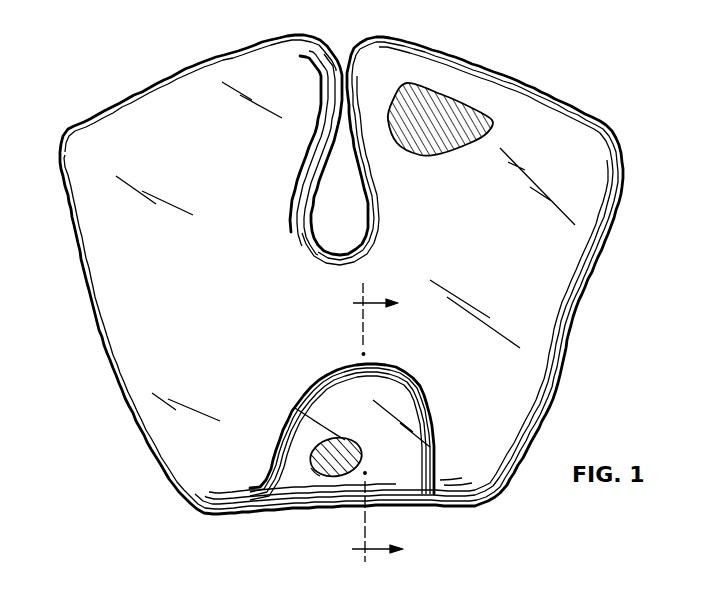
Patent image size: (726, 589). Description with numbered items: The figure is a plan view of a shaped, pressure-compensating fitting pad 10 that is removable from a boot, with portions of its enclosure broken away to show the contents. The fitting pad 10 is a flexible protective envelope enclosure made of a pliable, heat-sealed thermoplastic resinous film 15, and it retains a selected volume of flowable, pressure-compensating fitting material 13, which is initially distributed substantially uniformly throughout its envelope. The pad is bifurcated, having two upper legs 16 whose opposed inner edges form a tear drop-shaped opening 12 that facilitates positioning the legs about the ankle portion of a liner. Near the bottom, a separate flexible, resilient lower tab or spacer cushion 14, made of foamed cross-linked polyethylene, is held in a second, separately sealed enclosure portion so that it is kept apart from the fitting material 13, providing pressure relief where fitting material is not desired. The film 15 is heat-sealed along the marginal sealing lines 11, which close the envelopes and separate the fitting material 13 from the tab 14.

The fitting pad 10 is at (341, 289).
The sealing lines 11 is at (220, 50).
The tear drop-shaped opening 12 is at (345, 197).
The fitting material 13 is at (450, 108).
The lower tab 14 is at (350, 472).
The thermoplastic resinous film 15 is at (492, 125).
The upper legs 16 is at (278, 62).